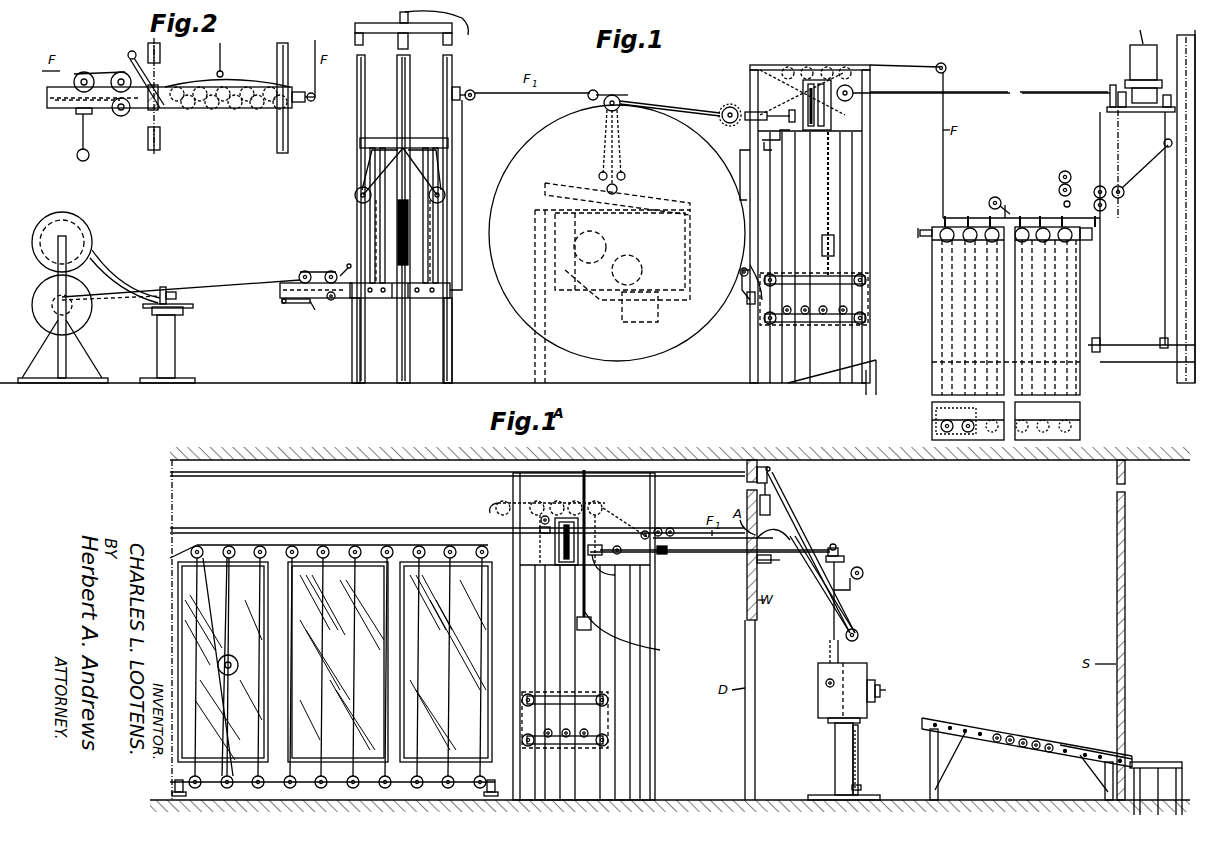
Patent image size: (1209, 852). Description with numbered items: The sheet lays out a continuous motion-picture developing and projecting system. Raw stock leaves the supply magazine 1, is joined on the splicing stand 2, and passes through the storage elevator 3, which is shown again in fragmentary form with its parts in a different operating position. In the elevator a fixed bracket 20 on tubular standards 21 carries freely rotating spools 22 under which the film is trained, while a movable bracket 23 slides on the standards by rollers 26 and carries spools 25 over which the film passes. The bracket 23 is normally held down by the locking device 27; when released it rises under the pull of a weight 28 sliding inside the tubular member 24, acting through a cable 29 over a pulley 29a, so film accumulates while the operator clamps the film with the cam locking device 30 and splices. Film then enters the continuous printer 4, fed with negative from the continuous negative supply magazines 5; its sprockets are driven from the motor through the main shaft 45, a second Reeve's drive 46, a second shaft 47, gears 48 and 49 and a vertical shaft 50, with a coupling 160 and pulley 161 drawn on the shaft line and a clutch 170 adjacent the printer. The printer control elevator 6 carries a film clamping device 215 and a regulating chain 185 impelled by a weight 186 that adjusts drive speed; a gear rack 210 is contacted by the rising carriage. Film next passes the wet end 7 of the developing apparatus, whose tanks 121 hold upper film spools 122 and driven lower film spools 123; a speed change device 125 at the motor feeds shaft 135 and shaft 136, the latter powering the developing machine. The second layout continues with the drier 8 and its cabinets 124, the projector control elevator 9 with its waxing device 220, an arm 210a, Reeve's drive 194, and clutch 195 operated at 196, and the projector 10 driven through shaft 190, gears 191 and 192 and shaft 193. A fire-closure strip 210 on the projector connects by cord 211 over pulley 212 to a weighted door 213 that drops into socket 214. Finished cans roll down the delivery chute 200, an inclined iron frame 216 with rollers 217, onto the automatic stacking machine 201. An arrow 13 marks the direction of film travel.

In FIG. 1, the supply magazine 1 is at (85, 226).
In FIG. 1, the splicing stand 2 is at (175, 338).
In FIG. 1, the storage elevator 3 is at (356, 185).
In FIG. 1, the continuous printer 4 is at (630, 212).
In FIG. 1, the continuous negative supply magazines 5 is at (700, 330).
In FIG. 1, the printer control elevator 6 is at (870, 161).
In FIG. 1, the wet end of the developing apparatus 7 is at (932, 276).
In FIG. 1A, the drier 8 is at (350, 548).
In FIG. 1A, the projector control elevator 9 is at (612, 628).
In FIG. 1A, the projector 10 is at (866, 668).
In FIG. 1, the direction of travel 13 is at (728, 72).
In FIG. 2, the fixed bracket 20 is at (181, 95).
In FIG. 1, the fixed bracket 20 is at (368, 295).
In FIG. 2, the tubular standards 21 is at (156, 150).
In FIG. 1, the tubular standards 21 is at (357, 346).
In FIG. 2, the freely rotating spools 22 is at (215, 108).
In FIG. 2, the movable bracket 23 is at (283, 70).
In FIG. 1, the movable bracket 23 is at (360, 140).
In FIG. 1, the tubular member 24 is at (410, 108).
In FIG. 2, the film spools 25 is at (235, 82).
In FIG. 1, the rollers 26 is at (356, 198).
In FIG. 2, the locking device 27 is at (130, 54).
In FIG. 1, the locking device 27 is at (345, 270).
In FIG. 1, the weight 28 is at (397, 220).
In FIG. 1, the cable 29 is at (397, 75).
In FIG. 1, the pulley 29a is at (449, 28).
In FIG. 2, the cam locking device 30 is at (88, 114).
In FIG. 1, the cam locking device 30 is at (310, 301).
In FIG. 1, the main shaft 45 is at (1046, 92).
In FIG. 1, the second Reeve's drive 46 is at (815, 82).
In FIG. 1, the second shaft 47 is at (695, 108).
In FIG. 1, the gear 48 is at (618, 110).
In FIG. 1, the gear 49 is at (619, 118).
In FIG. 1, the vertical shaft 50 is at (617, 199).
In FIG. 1, the tanks 121 is at (960, 326).
In FIG. 1, the upper film spools 122 is at (960, 220).
In FIG. 1, the lower film spools 123 is at (1072, 420).
In FIG. 1A, the cabinets 124 is at (243, 547).
In FIG. 1, the speed change device 125 is at (1128, 95).
In FIG. 1, the shaft 135 is at (1165, 85).
In FIG. 1, the shaft 136 is at (1163, 210).
In FIG. 1, the coupling 160 is at (747, 121).
In FIG. 1, the pulley 161 is at (722, 122).
In FIG. 1, the clutch 170 is at (800, 102).
In FIG. 1, the regulating chain 185 is at (832, 206).
In FIG. 1, the weight 186 is at (835, 243).
In FIG. 1A, the shaft 190 is at (695, 554).
In FIG. 1A, the gear 191 is at (838, 548).
In FIG. 1A, the gear 192 is at (845, 558).
In FIG. 1A, the shaft 193 is at (840, 582).
In FIG. 1A, the Reeve's drive 194 is at (566, 520).
In FIG. 1A, the clutch 195 is at (616, 565).
In FIG. 1A, the clutch operating point 196 is at (858, 760).
In FIG. 1A, the delivery chute 200 is at (975, 724).
In FIG. 1A, the automatic stacking machine 201 is at (1160, 764).
In FIG. 1A, the gear rack 210 is at (830, 656).
In FIG. 1A, the arm 210a is at (636, 563).
In FIG. 1A, the cord 211 is at (830, 607).
In FIG. 1A, the pulley 212 is at (768, 470).
In FIG. 1A, the weighted door 213 is at (770, 504).
In FIG. 1A, the socket 214 is at (780, 532).
In FIG. 1, the film clamping device 215 is at (742, 290).
In FIG. 1A, the inclined iron frame 216 is at (1068, 745).
In FIG. 1A, the rollers 217 is at (1040, 738).
In FIG. 1A, the waxing device 220 is at (707, 531).